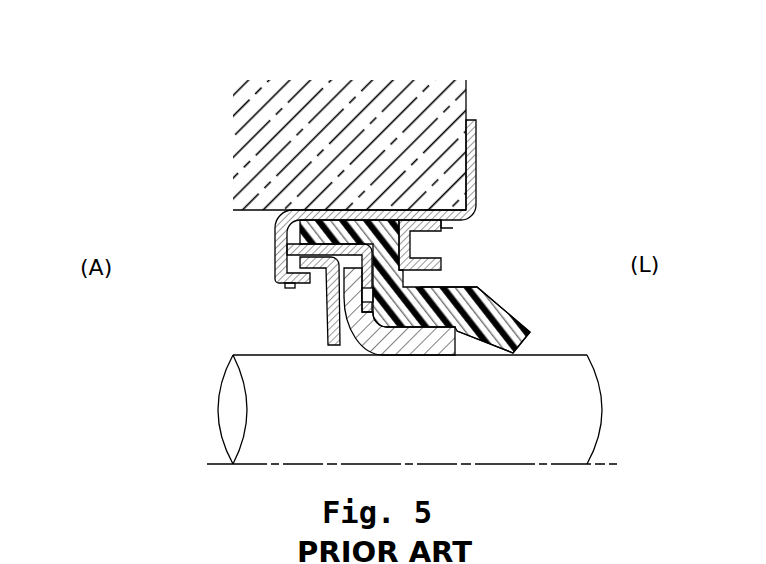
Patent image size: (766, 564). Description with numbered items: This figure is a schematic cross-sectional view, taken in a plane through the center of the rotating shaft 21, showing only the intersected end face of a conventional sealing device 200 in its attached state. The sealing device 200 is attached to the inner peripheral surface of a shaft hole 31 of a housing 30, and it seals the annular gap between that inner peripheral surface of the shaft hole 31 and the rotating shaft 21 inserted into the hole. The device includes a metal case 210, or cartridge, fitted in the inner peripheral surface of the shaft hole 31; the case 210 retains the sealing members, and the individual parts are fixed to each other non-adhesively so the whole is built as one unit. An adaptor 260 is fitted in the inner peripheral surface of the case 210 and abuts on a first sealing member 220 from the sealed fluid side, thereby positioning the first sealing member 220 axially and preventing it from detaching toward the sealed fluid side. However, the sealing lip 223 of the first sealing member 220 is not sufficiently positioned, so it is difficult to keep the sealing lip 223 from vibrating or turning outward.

The housing 30 is at (300, 90).
The shaft hole 31 is at (238, 211).
The sealing device 200 is at (466, 230).
The case 210 is at (480, 163).
The adaptor 260 is at (453, 228).
The first sealing member 220 is at (466, 286).
The sealing lip 223 is at (492, 310).
The rotating shaft 21 is at (583, 415).